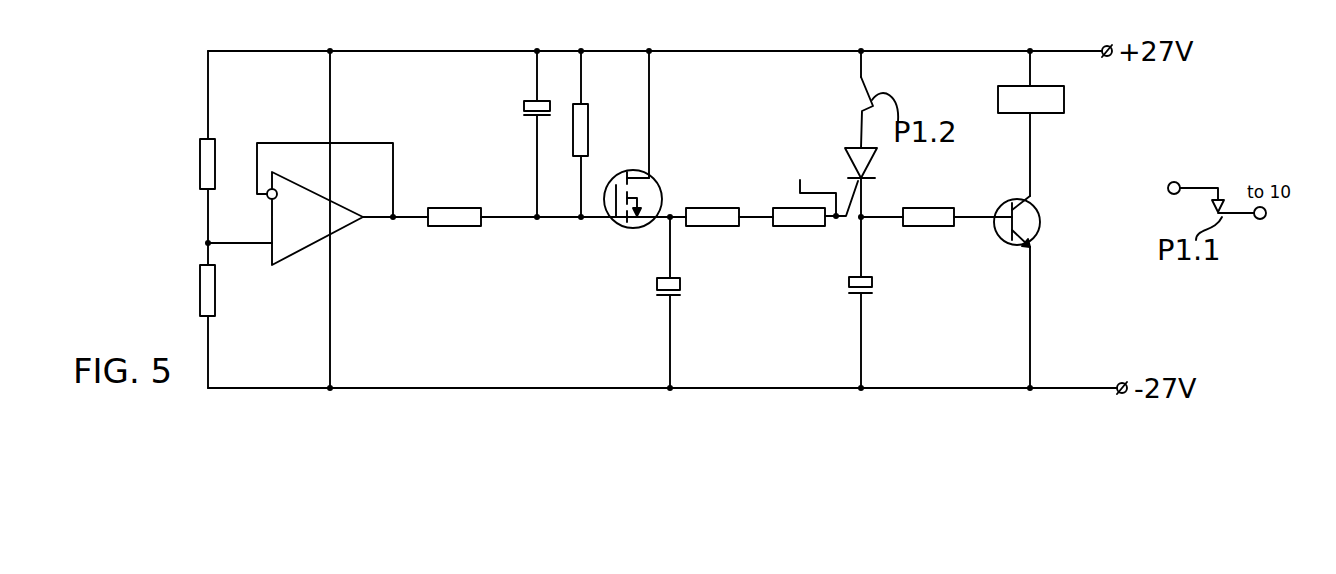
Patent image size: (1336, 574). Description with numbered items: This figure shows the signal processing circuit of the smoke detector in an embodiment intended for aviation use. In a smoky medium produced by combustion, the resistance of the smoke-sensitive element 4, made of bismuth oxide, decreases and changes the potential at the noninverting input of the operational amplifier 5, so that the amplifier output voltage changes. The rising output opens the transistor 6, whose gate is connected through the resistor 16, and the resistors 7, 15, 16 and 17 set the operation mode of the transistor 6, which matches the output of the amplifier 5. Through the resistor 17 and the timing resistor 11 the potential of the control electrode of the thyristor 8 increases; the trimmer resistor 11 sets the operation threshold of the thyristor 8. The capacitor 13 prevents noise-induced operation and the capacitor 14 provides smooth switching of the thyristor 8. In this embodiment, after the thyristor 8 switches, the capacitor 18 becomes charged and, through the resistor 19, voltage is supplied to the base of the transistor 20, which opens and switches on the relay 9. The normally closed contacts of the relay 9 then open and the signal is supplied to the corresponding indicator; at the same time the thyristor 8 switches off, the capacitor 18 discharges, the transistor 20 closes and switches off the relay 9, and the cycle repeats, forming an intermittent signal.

The smoke-sensitive element 4 is at (215, 293).
The operational amplifier 5 is at (343, 231).
The transistor 6 is at (622, 226).
The resistor 7 is at (213, 139).
The thyristor 8 is at (847, 147).
The relay 9 is at (1064, 108).
The timing resistor 11 is at (780, 226).
The capacitor 13 is at (524, 105).
The capacitor 14 is at (682, 290).
The resistor 15 is at (588, 113).
The resistor 16 is at (437, 226).
The resistor 17 is at (695, 226).
The capacitor 18 is at (872, 288).
The resistor 19 is at (950, 208).
The transistor 20 is at (1040, 232).